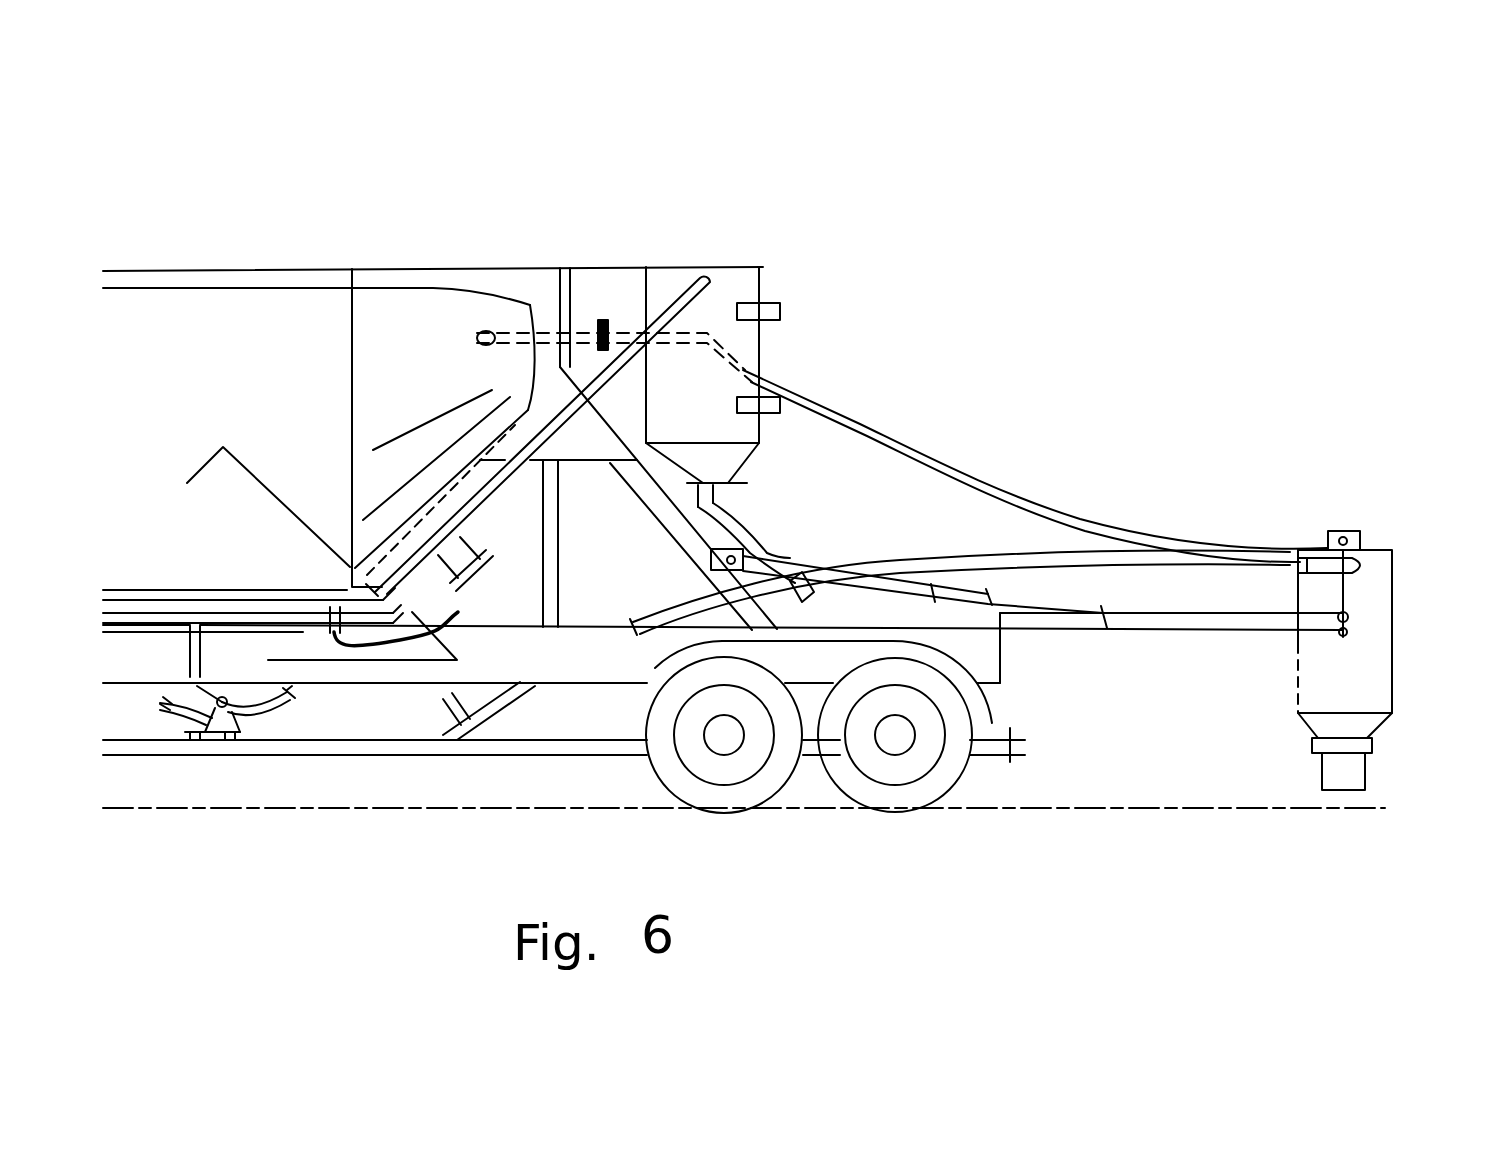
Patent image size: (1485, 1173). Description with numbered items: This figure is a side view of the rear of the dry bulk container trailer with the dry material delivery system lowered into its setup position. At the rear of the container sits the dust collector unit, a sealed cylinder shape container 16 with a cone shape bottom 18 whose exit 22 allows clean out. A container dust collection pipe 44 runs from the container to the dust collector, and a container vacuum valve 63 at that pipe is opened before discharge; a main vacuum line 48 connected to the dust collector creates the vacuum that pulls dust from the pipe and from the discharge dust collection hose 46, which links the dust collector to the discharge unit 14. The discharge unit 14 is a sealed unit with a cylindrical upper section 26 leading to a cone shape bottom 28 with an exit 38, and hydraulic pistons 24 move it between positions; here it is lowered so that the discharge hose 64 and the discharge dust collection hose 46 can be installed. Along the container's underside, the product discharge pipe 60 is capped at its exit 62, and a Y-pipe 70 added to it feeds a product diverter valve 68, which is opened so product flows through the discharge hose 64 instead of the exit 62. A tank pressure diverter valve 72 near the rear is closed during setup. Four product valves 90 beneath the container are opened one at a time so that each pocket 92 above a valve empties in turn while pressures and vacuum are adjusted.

The discharge unit 14 is at (796, 351).
The cylinder shape container 16 is at (737, 298).
The cone shape bottom 18 is at (728, 478).
The exit 22 is at (747, 485).
The hydraulic pistons 24 is at (805, 570).
The upper section 26 is at (1298, 668).
The cone shape bottom 28 is at (1307, 723).
The exit 38 is at (1372, 743).
The container dust collection pipe 44 is at (624, 335).
The discharge dust collection hose 46 is at (890, 432).
The main vacuum line 48 is at (675, 307).
The product discharge pipe 60 is at (323, 753).
The exit 62 is at (1013, 733).
The container vacuum valve 63 is at (603, 318).
The discharge hose 64 is at (1117, 565).
The product diverter valve 68 is at (462, 740).
The Y-pipe 70 is at (430, 733).
The tank pressure diverter valve 72 is at (470, 608).
The product valves 90 is at (222, 740).
The pocket 92 is at (198, 722).